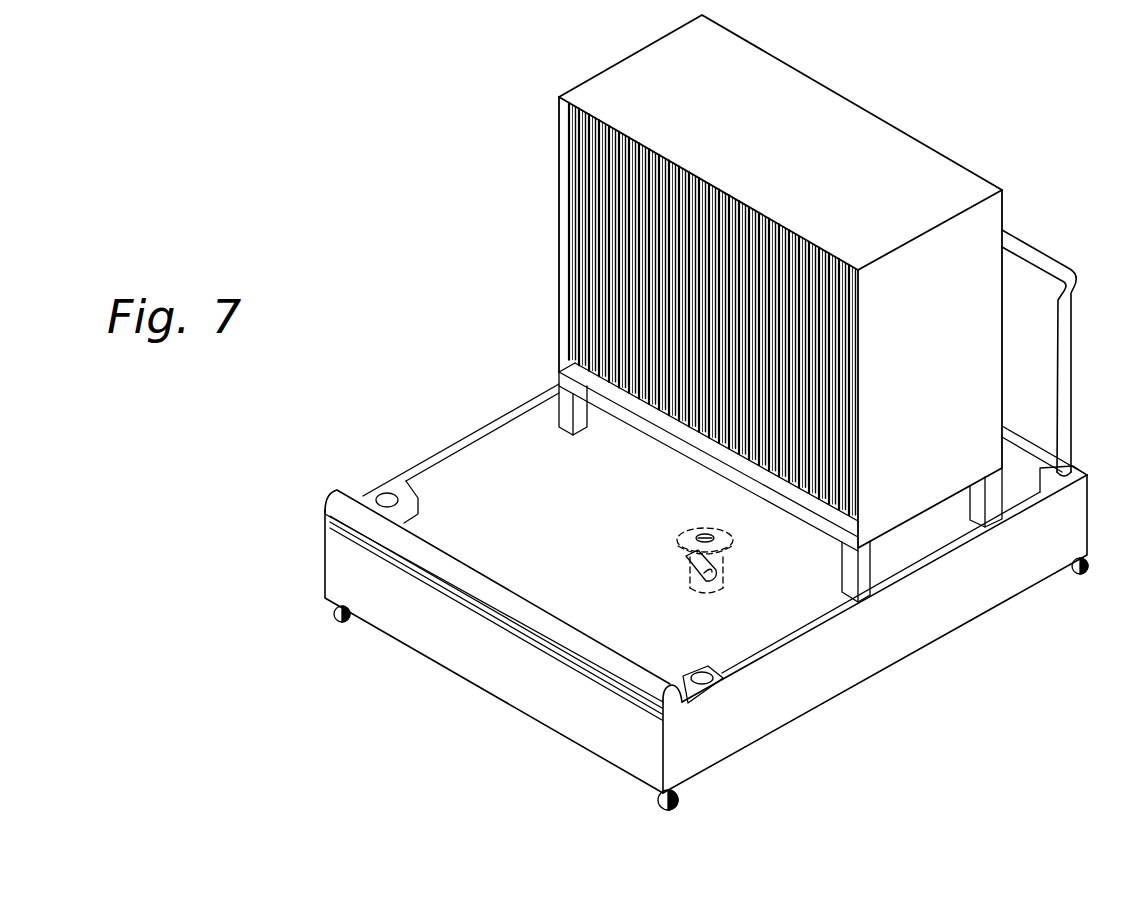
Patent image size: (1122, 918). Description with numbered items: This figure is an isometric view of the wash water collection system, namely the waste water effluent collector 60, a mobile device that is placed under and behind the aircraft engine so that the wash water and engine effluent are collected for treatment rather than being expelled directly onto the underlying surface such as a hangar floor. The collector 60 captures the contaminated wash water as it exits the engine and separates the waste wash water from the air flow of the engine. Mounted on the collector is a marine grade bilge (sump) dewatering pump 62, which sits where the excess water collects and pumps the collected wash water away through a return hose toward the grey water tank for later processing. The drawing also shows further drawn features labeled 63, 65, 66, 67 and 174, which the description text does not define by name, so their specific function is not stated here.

The waste water effluent collector 60 is at (437, 165).
The marine grade bilge (sump) dewatering pump 62 is at (852, 101).
The drain valve 63 is at (688, 565).
The base tray 65 is at (880, 662).
The rounded rail 66 is at (452, 556).
The handle 67 is at (1050, 250).
The mounting pad with hole 174 is at (388, 493).